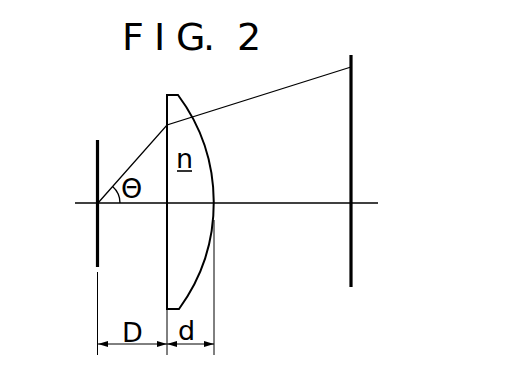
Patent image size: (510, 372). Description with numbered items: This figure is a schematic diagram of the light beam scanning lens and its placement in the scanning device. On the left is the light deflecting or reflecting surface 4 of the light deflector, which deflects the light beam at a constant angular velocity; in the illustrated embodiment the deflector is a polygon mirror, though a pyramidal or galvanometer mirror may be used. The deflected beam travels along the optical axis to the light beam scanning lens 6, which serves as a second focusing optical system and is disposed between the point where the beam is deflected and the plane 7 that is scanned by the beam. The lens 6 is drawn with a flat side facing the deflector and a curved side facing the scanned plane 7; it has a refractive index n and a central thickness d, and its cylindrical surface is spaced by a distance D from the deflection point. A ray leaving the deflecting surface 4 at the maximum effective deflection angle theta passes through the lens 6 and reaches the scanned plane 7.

The light deflecting or reflecting surface 4 is at (97, 151).
The light beam scanning lens 6 is at (185, 102).
The plane scanned by the light beam 7 is at (351, 107).